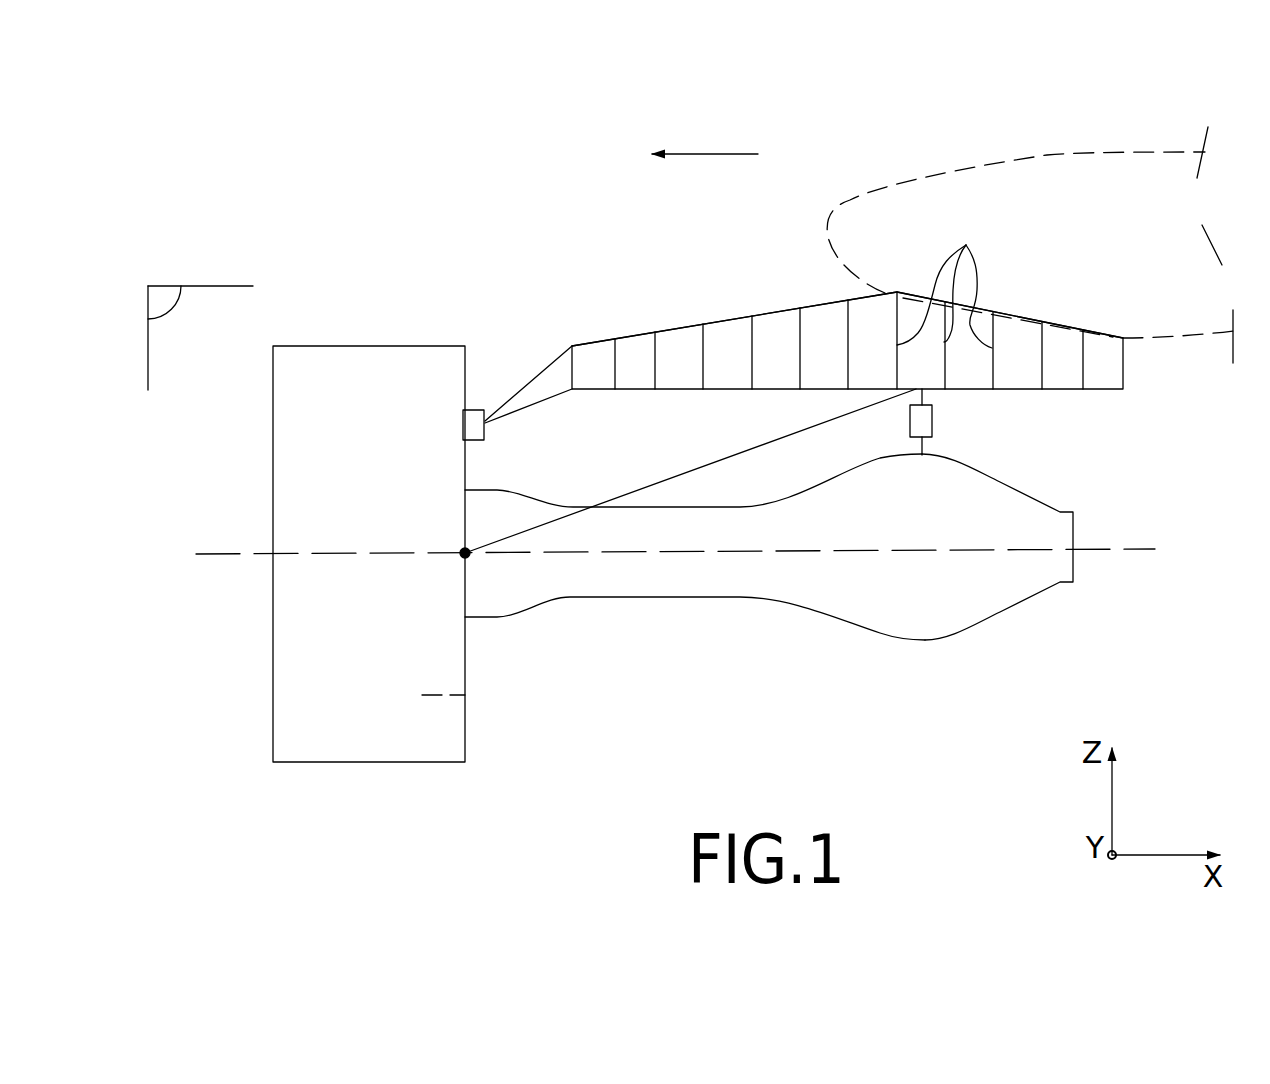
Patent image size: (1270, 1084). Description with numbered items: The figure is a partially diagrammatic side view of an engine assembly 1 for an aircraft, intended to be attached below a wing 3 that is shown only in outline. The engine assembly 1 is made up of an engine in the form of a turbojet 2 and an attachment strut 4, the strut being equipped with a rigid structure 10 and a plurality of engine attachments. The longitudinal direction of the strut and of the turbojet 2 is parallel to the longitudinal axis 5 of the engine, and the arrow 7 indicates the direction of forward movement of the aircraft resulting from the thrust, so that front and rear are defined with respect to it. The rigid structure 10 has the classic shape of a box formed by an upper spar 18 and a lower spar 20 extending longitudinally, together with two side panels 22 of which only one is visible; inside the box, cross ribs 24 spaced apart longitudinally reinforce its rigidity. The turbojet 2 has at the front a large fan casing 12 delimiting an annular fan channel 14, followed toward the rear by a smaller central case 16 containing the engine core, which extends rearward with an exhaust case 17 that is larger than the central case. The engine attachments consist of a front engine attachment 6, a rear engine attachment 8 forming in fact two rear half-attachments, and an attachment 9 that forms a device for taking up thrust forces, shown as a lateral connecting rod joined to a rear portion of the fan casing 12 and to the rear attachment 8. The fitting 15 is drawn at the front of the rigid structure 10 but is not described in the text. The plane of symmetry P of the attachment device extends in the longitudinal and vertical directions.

The engine assembly 1 is at (438, 285).
The turbojet 2 is at (410, 765).
The wing 3 is at (905, 180).
The attachment strut 4 is at (662, 307).
The longitudinal axis 5 is at (213, 554).
The front engine attachment 6 is at (475, 402).
The arrow 7 is at (697, 153).
The rear engine attachment 8 is at (932, 420).
The attachment forming a thrust take-up device 9 is at (733, 453).
The rigid structure 10 is at (753, 313).
The fan casing 12 is at (328, 737).
The annular fan channel 14 is at (465, 695).
The forward attachment fitting 15 is at (537, 387).
The central case 16 is at (657, 597).
The exhaust case 17 is at (930, 642).
The upper spar 18 is at (1023, 318).
The lower spar 20 is at (1032, 389).
The side panels 22 is at (1058, 360).
The cross ribs 24 is at (944, 282).